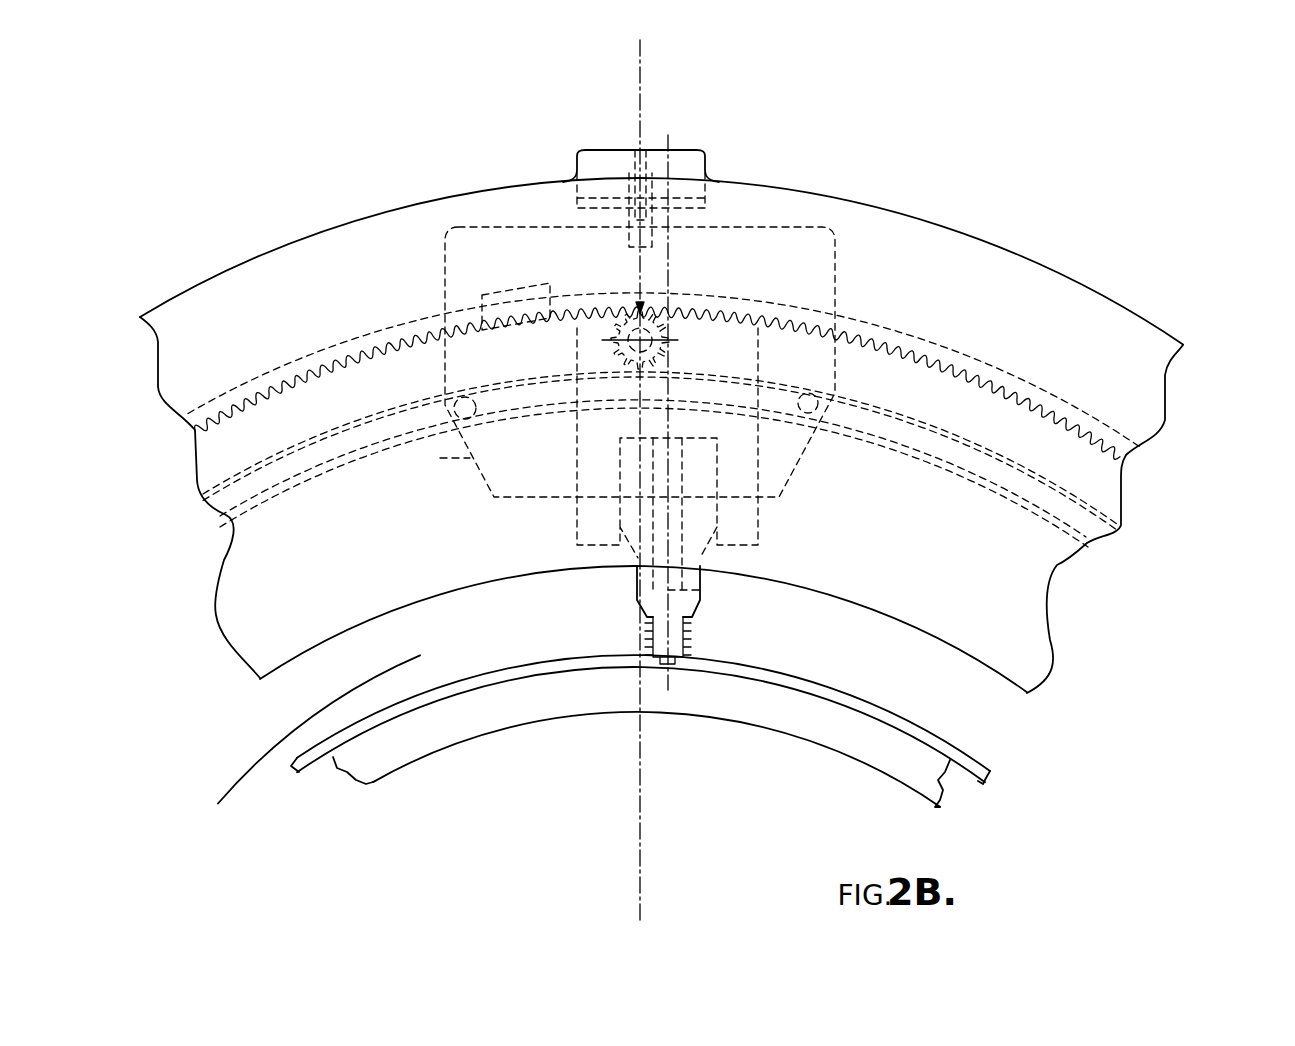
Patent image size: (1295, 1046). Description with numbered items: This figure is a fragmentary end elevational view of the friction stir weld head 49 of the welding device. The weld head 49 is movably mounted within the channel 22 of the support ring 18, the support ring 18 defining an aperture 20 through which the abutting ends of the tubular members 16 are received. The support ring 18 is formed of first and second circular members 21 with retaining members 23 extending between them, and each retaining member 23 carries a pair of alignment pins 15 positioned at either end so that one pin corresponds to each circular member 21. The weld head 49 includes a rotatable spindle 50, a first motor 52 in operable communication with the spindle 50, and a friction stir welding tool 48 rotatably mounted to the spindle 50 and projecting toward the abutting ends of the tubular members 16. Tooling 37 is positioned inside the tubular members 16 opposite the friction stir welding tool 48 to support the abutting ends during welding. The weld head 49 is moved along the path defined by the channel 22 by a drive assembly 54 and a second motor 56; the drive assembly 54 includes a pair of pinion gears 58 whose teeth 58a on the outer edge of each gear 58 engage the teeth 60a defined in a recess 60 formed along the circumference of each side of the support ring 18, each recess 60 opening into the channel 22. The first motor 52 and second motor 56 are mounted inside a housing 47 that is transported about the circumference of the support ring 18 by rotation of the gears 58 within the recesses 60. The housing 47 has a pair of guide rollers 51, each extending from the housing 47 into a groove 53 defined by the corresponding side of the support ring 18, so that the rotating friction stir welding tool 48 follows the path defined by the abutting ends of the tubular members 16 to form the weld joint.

The alignment pins 15 is at (632, 175).
The tubular members 16 is at (912, 733).
The support ring 18 is at (1072, 302).
The aperture 20 is at (607, 707).
The circular members 21 is at (897, 247).
The channel 22 is at (300, 420).
The retaining member 23 is at (690, 165).
The tooling 37 is at (780, 717).
The housing 47 is at (782, 462).
The friction stir welding tool 48 is at (700, 623).
The friction stir weld head 49 is at (470, 458).
The rotatable spindle 50 is at (700, 590).
The guide rollers 51 is at (453, 408).
The first motor 52 is at (600, 442).
The groove 53 is at (232, 493).
The drive assembly 54 is at (650, 317).
The second motor 56 is at (522, 298).
The gears 58 is at (670, 347).
The teeth 58a is at (613, 343).
The recess 60 is at (962, 410).
The teeth 60a is at (883, 331).